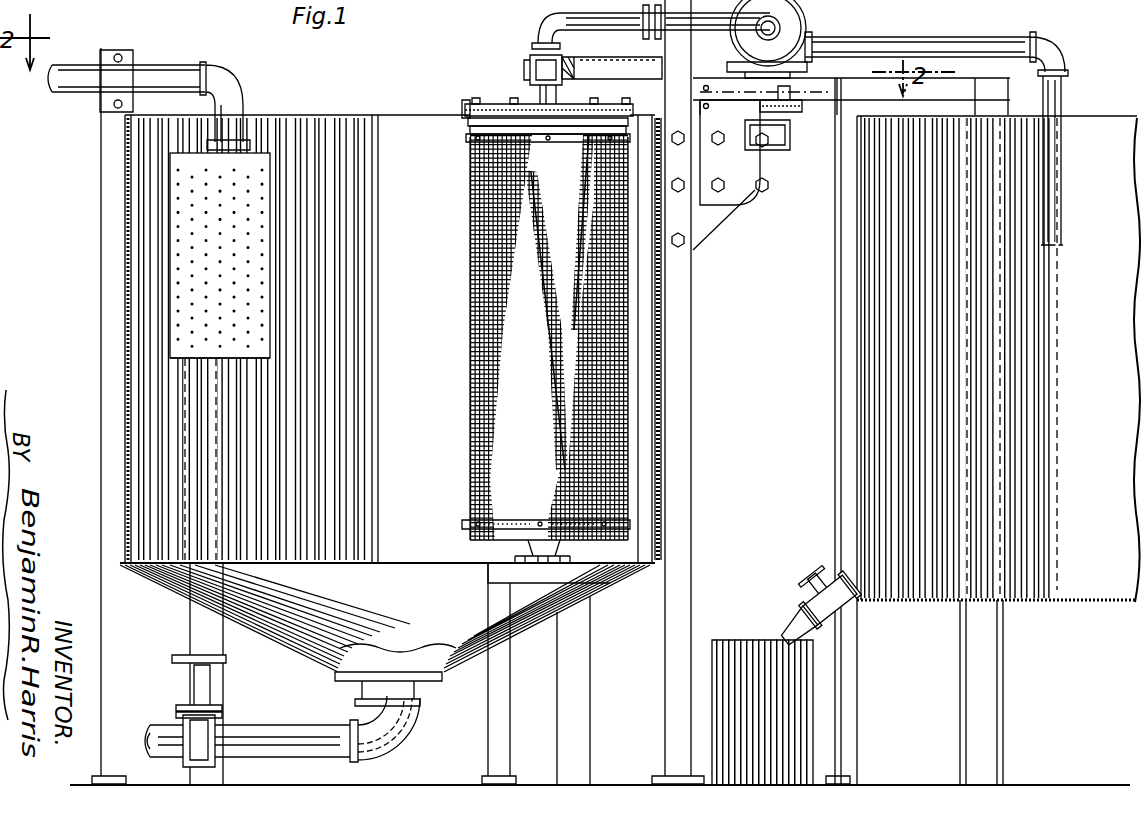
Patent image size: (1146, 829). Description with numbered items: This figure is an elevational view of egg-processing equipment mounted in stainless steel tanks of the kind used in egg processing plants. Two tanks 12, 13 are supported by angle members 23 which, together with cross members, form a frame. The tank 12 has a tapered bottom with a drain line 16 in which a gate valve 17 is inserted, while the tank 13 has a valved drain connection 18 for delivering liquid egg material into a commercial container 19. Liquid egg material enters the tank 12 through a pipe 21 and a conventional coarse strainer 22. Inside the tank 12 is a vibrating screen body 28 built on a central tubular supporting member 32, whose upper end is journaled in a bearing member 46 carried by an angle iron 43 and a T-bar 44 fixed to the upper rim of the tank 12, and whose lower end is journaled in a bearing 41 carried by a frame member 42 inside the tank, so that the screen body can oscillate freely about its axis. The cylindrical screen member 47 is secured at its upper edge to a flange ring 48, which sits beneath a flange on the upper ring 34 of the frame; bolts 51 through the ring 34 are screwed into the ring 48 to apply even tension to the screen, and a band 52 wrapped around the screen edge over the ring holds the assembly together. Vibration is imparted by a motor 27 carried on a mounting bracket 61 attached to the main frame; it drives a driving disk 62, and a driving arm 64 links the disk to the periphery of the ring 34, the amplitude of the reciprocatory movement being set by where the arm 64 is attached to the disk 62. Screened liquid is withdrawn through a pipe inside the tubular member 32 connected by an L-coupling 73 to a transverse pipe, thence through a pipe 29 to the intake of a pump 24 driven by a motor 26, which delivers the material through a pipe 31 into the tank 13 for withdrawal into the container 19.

The tank 12 is at (660, 424).
The tank 13 is at (860, 462).
The drain line 16 is at (402, 736).
The gate valve 17 is at (196, 716).
The valved drain connection 18 is at (802, 596).
The container 19 is at (800, 676).
The pipe 21 is at (182, 78).
The coarse strainer 22 is at (178, 190).
The angle members 23 is at (101, 318).
The pump 24 is at (792, 5).
The motor 26 is at (810, 56).
The motor 27 is at (762, 190).
The screen body 28 is at (514, 337).
The pipe 29 is at (713, 22).
The pipe 31 is at (1054, 216).
The central tubular supporting member 32 is at (546, 96).
The upper ring 34 is at (466, 108).
The bearing 41 is at (528, 549).
The frame member 42 is at (497, 583).
The angle iron 43 is at (566, 66).
The T-bar 44 is at (294, 650).
The bearing member 46 is at (532, 64).
The cylindrical screen member 47 is at (480, 448).
The flange ring 48 is at (468, 120).
The bolts 51 is at (468, 108).
The band 52 is at (468, 138).
The mounting bracket 61 is at (720, 210).
The driving disk 62 is at (810, 106).
The driving arm 64 is at (746, 130).
The L-coupling 73 is at (556, 22).